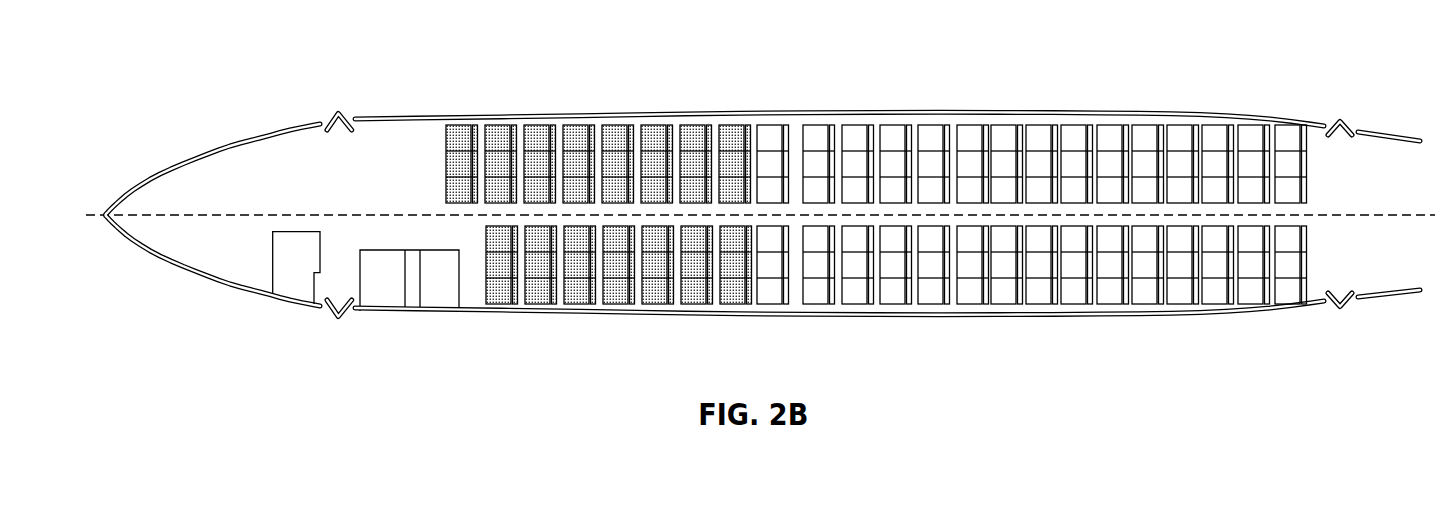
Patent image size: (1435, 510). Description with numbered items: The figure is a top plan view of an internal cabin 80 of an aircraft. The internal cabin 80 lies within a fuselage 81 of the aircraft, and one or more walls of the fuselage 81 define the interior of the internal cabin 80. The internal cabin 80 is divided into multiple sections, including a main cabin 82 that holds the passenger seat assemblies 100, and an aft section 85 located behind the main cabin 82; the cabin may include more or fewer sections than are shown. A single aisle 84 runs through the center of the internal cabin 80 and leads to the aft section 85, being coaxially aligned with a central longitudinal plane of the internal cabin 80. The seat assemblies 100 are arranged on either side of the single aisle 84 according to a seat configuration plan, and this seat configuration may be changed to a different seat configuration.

The internal cabin 80 is at (358, 54).
The fuselage 81 is at (563, 115).
The main cabin 82 is at (498, 140).
The single aisle 84 is at (893, 212).
The aft section 85 is at (1325, 148).
The passenger seat assemblies 100 is at (772, 145).